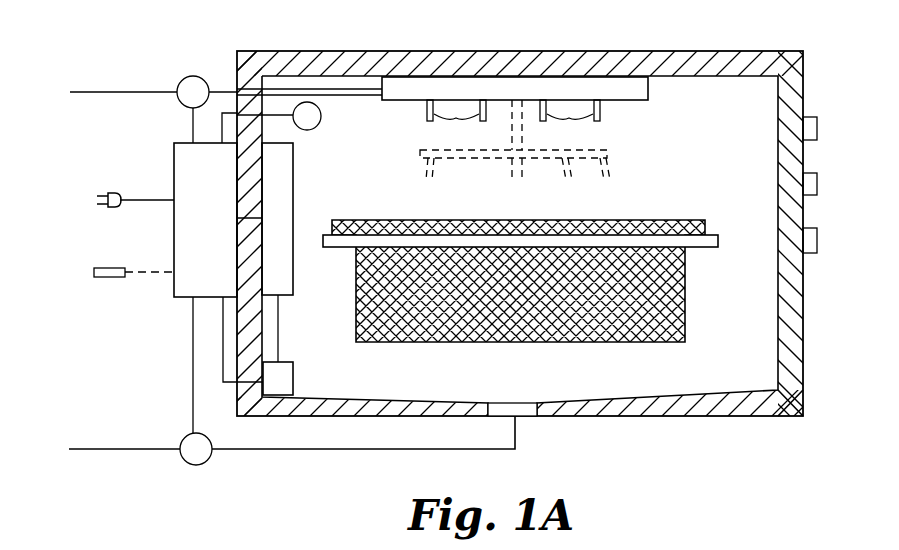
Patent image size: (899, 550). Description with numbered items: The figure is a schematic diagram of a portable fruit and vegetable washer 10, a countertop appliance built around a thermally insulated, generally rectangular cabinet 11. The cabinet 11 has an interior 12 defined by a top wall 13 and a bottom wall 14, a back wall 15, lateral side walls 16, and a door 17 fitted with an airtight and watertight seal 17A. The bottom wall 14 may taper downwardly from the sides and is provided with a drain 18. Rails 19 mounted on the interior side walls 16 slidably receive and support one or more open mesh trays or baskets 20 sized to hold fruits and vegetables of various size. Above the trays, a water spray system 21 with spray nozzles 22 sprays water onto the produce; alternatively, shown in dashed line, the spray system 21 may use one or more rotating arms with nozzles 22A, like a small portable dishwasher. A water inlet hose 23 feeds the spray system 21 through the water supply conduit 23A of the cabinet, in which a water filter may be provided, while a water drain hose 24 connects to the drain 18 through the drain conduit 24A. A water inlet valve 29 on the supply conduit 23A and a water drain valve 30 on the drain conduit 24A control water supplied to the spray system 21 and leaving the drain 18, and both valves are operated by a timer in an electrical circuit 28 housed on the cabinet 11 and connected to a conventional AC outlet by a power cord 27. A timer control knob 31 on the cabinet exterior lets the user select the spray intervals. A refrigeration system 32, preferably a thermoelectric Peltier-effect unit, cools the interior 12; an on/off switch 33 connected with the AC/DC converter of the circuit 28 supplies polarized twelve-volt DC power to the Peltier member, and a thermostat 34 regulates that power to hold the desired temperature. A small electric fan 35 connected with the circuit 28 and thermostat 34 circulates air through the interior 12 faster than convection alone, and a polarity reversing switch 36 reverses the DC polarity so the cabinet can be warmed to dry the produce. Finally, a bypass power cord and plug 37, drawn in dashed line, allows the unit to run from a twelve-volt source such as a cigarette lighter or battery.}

The fruit and vegetable washer 10 is at (110, 346).
The cabinet 11 is at (718, 51).
The interior 12 is at (687, 183).
The top wall 13 is at (728, 76).
The bottom wall 14 is at (706, 392).
The back wall 15 is at (238, 404).
The lateral side walls 16 is at (404, 374).
The door 17 is at (805, 295).
The seal 17A is at (803, 393).
The drain 18 is at (524, 418).
The rails 19 is at (698, 246).
The open mesh trays or baskets 20 is at (520, 328).
The water spray system 21 is at (650, 90).
The spray nozzles 22 is at (513, 123).
The rotating arms with nozzles 22A is at (610, 158).
The water inlet hose 23 is at (77, 90).
The water supply conduit 23A is at (350, 88).
The water drain hose 24 is at (77, 449).
The drain conduit 24A is at (325, 455).
The power cord 27 is at (135, 198).
The electrical circuit 28 is at (172, 230).
The water inlet valve 29 is at (191, 76).
The water drain valve 30 is at (205, 465).
The timer control knob 31 is at (818, 128).
The refrigeration system 32 is at (295, 213).
The on/off switch 33 is at (818, 183).
The thermostat 34 is at (316, 127).
The electric fan 35 is at (300, 377).
The polarity reversing switch 36 is at (818, 238).
The power cord and plug 37 is at (108, 278).